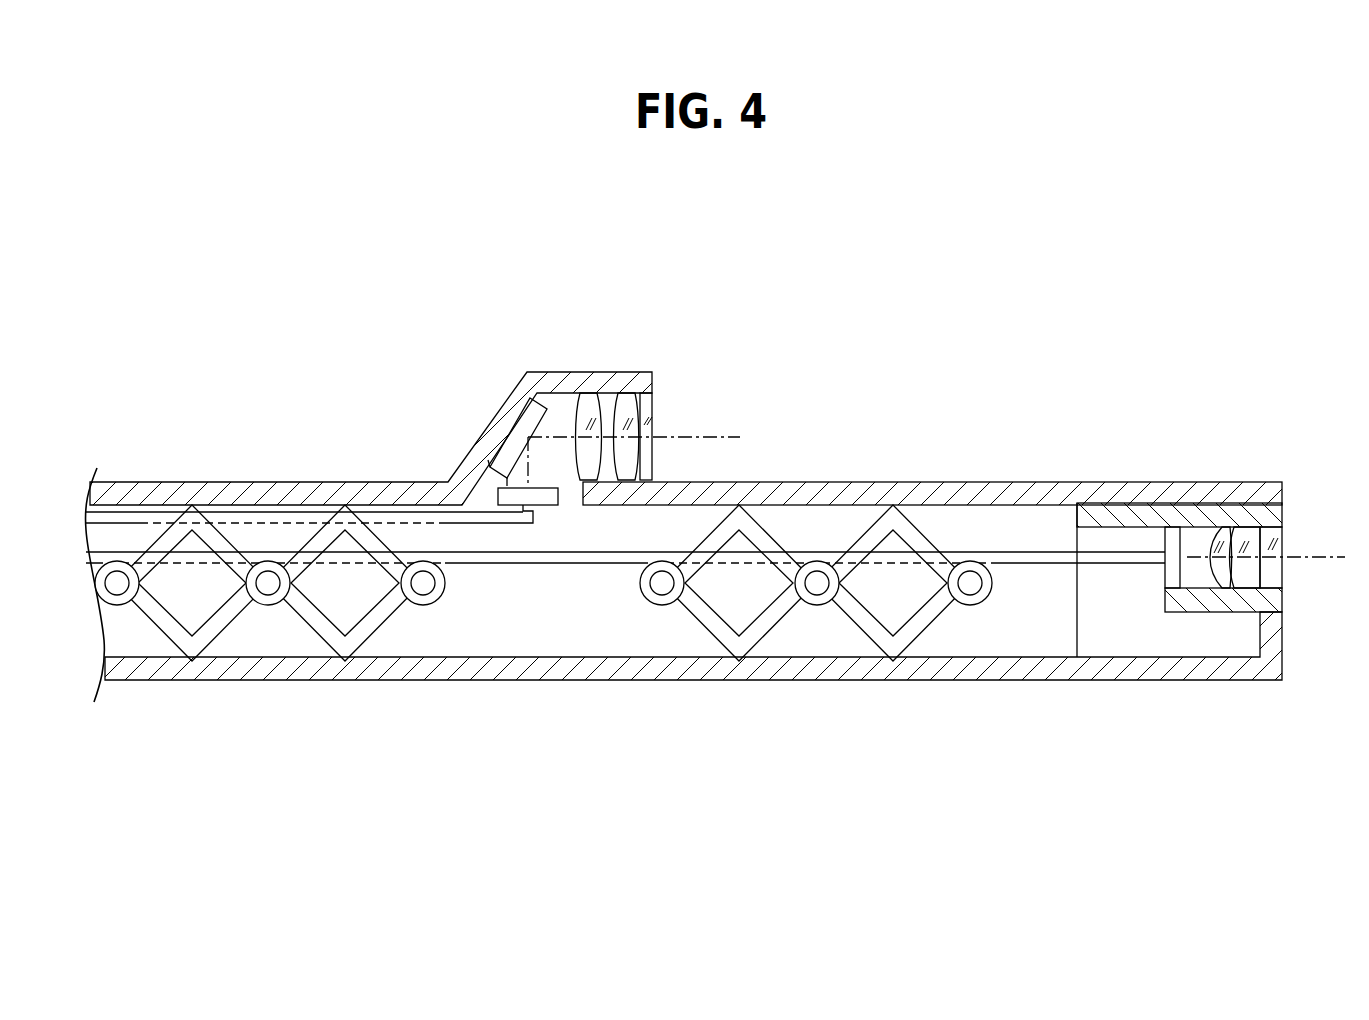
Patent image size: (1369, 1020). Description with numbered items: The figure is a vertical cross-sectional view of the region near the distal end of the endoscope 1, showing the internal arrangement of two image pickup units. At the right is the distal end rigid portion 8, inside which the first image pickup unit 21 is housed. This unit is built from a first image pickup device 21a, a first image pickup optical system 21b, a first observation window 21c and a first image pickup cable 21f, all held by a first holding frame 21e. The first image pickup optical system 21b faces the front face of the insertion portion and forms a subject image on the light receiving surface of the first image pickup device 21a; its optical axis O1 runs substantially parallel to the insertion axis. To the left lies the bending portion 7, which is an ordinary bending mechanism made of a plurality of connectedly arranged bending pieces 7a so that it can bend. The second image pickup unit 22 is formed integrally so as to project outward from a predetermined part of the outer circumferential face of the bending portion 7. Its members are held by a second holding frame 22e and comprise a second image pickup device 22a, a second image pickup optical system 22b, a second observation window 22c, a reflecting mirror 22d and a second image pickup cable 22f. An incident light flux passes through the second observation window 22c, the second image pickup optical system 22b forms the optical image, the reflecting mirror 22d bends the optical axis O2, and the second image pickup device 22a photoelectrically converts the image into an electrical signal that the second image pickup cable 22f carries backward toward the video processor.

The endoscope 1 is at (948, 323).
The bending portion 7 is at (1077, 752).
The bending pieces 7a is at (327, 633).
The distal end rigid portion 8 is at (1282, 752).
The first image pickup unit 21 is at (1353, 412).
The first image pickup device 21a is at (1173, 527).
The first image pickup optical system 21b is at (1248, 527).
The first observation window 21c is at (1270, 527).
The first holding frame 21e is at (1277, 595).
The first image pickup cable 21f is at (1123, 555).
The second image pickup unit 22 is at (680, 296).
The second image pickup device 22a is at (506, 478).
The second image pickup optical system 22b is at (627, 398).
The second observation window 22c is at (648, 395).
The reflecting mirror 22d is at (492, 444).
The second holding frame 22e is at (590, 396).
The second image pickup cable 22f is at (397, 520).
The optical axis O1 is at (1313, 557).
The optical axis O2 is at (732, 437).